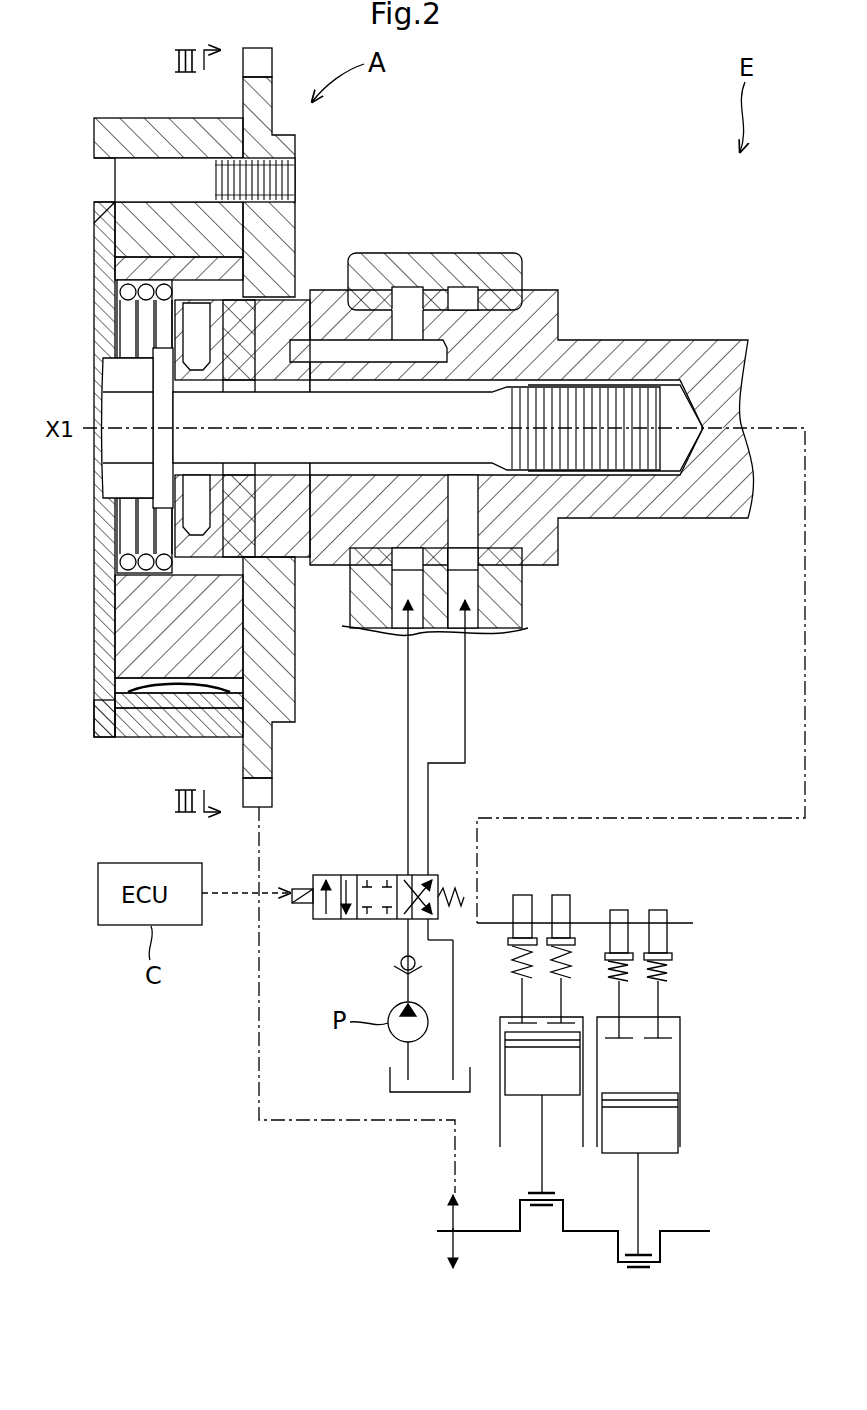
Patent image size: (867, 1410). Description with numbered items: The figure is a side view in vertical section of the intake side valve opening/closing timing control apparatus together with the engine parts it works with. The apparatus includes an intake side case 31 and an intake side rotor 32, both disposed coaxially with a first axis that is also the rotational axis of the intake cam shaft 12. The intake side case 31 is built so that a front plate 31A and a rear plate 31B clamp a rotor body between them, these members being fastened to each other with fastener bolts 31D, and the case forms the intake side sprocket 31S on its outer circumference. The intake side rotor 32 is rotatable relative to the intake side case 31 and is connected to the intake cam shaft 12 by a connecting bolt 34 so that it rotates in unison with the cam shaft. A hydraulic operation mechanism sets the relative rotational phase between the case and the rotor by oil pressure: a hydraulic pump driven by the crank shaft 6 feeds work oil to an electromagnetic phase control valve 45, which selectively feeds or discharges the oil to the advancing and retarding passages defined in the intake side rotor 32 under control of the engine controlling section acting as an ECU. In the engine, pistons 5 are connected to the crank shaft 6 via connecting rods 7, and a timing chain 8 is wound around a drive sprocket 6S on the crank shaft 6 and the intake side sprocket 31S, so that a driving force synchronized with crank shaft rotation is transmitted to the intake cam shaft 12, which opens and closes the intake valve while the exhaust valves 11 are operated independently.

The piston 5 is at (510, 1082).
The crank shaft 6 is at (487, 1229).
The drive sprocket 6S is at (452, 1214).
The connecting rod 7 is at (543, 1172).
The timing chain 8 is at (258, 1043).
The exhaust valve 11 is at (555, 1020).
The intake cam shaft 12 is at (663, 338).
The intake side case 31 is at (198, 117).
The front plate 31A is at (97, 712).
The rear plate 31B is at (292, 662).
The fastener bolt 31D is at (290, 181).
The intake side sprocket 31S is at (272, 793).
The intake side rotor 32 is at (125, 627).
The connecting bolt 34 is at (128, 360).
The phase control valve 45 is at (363, 920).